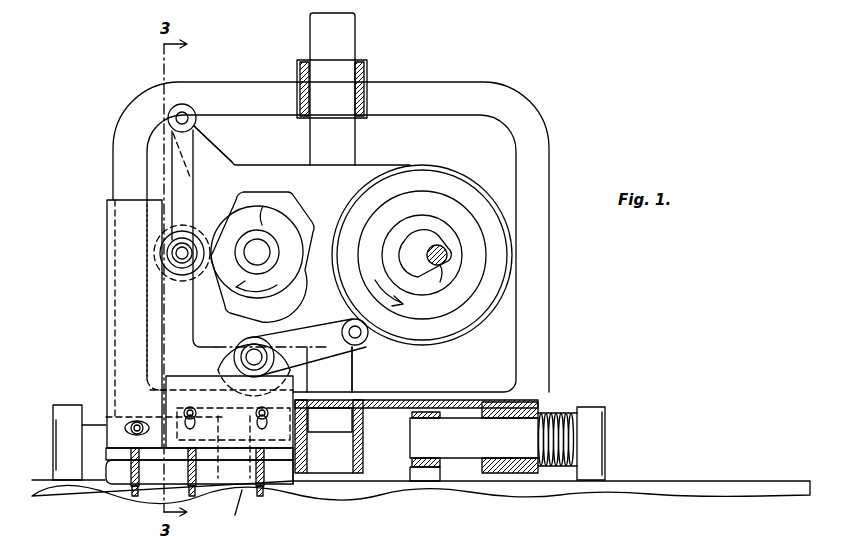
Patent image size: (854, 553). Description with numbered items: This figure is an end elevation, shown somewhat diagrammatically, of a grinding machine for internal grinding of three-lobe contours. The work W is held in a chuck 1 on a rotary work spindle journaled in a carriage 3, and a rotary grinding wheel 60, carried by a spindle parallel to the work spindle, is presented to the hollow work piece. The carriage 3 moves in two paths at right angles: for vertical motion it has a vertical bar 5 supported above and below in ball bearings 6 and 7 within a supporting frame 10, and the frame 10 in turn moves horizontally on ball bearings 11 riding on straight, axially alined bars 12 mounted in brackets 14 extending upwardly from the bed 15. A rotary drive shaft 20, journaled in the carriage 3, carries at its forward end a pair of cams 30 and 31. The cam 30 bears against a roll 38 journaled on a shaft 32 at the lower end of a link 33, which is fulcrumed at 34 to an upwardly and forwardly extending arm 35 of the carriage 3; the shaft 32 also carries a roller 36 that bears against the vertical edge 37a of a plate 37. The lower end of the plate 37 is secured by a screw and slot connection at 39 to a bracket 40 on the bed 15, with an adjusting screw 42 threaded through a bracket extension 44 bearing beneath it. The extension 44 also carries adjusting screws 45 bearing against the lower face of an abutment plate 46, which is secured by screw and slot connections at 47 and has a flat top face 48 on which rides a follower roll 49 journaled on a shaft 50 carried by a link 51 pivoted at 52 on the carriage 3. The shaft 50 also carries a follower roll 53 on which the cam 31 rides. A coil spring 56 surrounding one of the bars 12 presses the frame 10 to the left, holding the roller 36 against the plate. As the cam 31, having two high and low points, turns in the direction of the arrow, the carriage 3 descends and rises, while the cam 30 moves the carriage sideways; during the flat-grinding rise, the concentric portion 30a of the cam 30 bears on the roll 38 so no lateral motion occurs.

The chuck 1 is at (472, 243).
The carriage 3 is at (416, 166).
The vertical bar 5 is at (338, 153).
The ball bearing 6 is at (367, 82).
The ball bearing 7 is at (365, 446).
The supporting frame 10 is at (532, 163).
The ball bearings 11 is at (521, 402).
The bars 12 is at (93, 420).
The brackets 14 is at (60, 410).
The bed 15 is at (655, 481).
The rotary drive shaft 20 is at (258, 252).
The cam 30 is at (277, 292).
The concentric portion of the cam 30a is at (263, 206).
The cam 31 is at (303, 265).
The shaft 32 is at (185, 259).
The link 33 is at (185, 196).
The fulcrum 34 is at (188, 114).
The arm 35 is at (212, 150).
The roller 36 is at (167, 244).
The plate 37 is at (122, 262).
The vertical edge 37a is at (162, 306).
The roll 38 is at (195, 240).
The screw and slot connection 39 is at (125, 432).
The bracket 40 is at (100, 485).
The adjusting screw 42 is at (132, 492).
The bracket extension 44 is at (290, 490).
The adjusting screws 45 is at (194, 497).
The abutment plate 46 is at (309, 411).
The screw and slot connections 47 is at (199, 425).
The flat top face 48 is at (171, 375).
The follower roll 49 is at (298, 334).
The shaft 50 is at (248, 357).
The link 51 is at (331, 340).
The pivot 52 is at (366, 330).
The follower roll 53 is at (289, 369).
The coil spring 56 is at (560, 412).
The rotary grinding wheel 60 is at (440, 283).
The work W is at (433, 232).